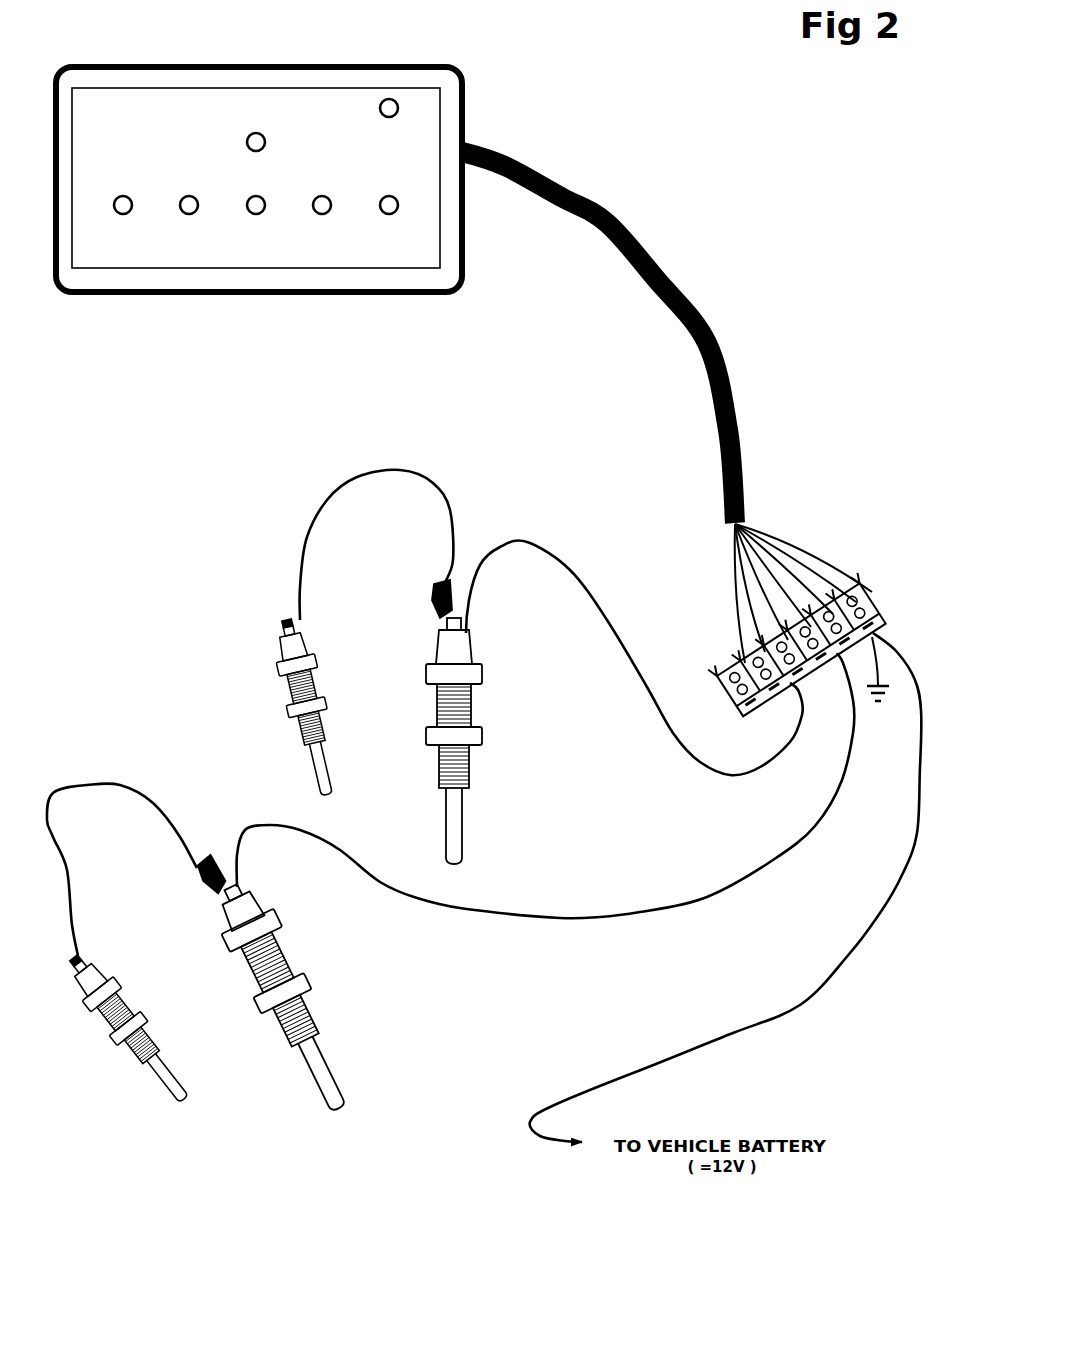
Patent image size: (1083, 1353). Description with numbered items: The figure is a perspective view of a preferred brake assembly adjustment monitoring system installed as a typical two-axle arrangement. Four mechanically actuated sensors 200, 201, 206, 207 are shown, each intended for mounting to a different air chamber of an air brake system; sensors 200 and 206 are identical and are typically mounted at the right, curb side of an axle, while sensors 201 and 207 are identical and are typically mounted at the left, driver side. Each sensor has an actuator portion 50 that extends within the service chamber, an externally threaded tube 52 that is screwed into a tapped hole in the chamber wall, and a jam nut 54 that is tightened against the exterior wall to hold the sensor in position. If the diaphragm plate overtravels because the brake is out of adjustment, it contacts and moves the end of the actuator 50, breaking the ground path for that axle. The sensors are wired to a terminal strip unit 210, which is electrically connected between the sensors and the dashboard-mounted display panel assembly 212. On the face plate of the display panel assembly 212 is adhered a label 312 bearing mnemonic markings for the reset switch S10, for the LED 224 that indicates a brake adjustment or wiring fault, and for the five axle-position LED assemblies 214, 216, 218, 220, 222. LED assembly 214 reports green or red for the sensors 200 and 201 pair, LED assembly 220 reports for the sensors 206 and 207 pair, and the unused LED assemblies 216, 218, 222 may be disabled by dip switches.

The actuator portion 50 is at (313, 768).
The externally threaded tube 52 is at (100, 1023).
The jam nut 54 is at (150, 1018).
The sensor 200 is at (104, 967).
The sensor 201 is at (285, 945).
The sensor 206 is at (287, 690).
The sensor 207 is at (434, 705).
The terminal strip unit 210 is at (888, 620).
The display panel assembly 212 is at (466, 262).
The label 312 is at (444, 222).
The LED assembly 214 is at (114, 213).
The LED assembly 216 is at (180, 213).
The LED assembly 218 is at (247, 213).
The LED assembly 220 is at (313, 213).
The LED assembly 222 is at (380, 213).
The LED 224 is at (268, 134).
The reset switch S10 is at (399, 100).